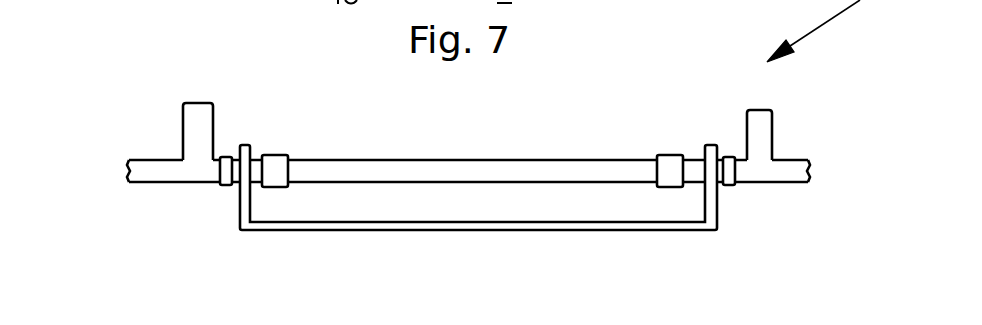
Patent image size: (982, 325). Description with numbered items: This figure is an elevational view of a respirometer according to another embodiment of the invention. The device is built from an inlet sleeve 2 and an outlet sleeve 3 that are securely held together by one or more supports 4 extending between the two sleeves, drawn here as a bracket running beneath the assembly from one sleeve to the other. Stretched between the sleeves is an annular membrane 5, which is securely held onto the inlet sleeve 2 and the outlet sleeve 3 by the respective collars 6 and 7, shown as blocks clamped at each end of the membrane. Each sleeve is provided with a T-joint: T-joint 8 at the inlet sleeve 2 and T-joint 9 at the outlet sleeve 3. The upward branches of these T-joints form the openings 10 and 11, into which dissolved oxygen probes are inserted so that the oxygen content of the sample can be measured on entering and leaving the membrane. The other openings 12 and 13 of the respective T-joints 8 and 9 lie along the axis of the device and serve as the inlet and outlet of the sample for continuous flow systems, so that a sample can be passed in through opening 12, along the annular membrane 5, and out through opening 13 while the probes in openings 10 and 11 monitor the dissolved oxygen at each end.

The inlet sleeve 2 is at (257, 157).
The outlet sleeve 3 is at (688, 157).
The support 4 is at (533, 233).
The annular membrane 5 is at (415, 160).
The collar 6 is at (280, 165).
The collar 7 is at (672, 157).
The T-joint 8 is at (192, 173).
The T-joint 9 is at (768, 187).
The opening 10 is at (197, 110).
The opening 11 is at (764, 116).
The opening 12 is at (127, 172).
The opening 13 is at (812, 170).